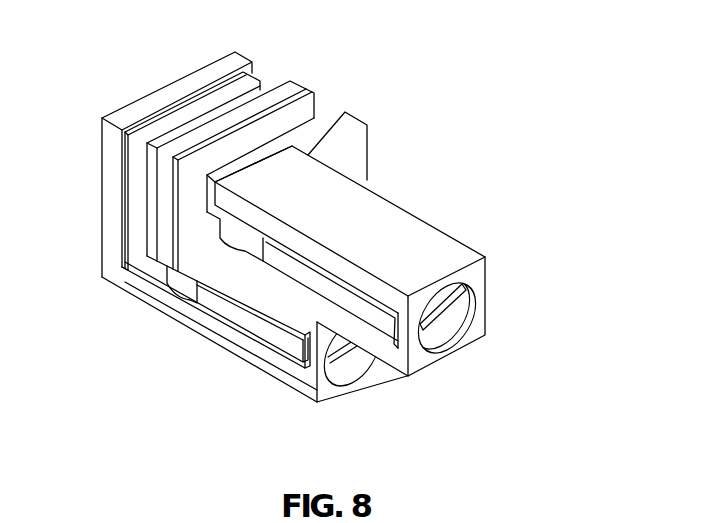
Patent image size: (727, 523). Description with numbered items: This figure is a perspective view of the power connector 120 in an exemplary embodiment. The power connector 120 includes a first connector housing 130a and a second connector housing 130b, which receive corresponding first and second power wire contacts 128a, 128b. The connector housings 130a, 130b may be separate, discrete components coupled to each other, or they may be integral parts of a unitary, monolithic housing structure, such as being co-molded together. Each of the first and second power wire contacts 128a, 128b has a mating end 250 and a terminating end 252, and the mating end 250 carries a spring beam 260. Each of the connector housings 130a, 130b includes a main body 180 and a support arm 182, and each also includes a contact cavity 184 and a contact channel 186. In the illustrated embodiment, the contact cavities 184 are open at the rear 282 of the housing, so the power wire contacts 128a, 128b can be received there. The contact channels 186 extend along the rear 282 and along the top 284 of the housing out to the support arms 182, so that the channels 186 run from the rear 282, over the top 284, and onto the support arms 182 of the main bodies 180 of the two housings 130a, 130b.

The power connector 120 is at (320, 74).
The main body 180 is at (447, 250).
The support arm 182 is at (125, 110).
The contact cavity 184 is at (197, 302).
The contact channel 186 is at (177, 100).
The mating end 250 is at (300, 78).
The terminating end 252 is at (130, 272).
The spring beam 260 is at (242, 157).
The rear 282 is at (108, 208).
The top 284 is at (408, 220).
The first power wire contact 128a is at (390, 316).
The second power wire contact 128b is at (290, 350).
The first connector housing 130a is at (420, 355).
The second connector housing 130b is at (325, 385).